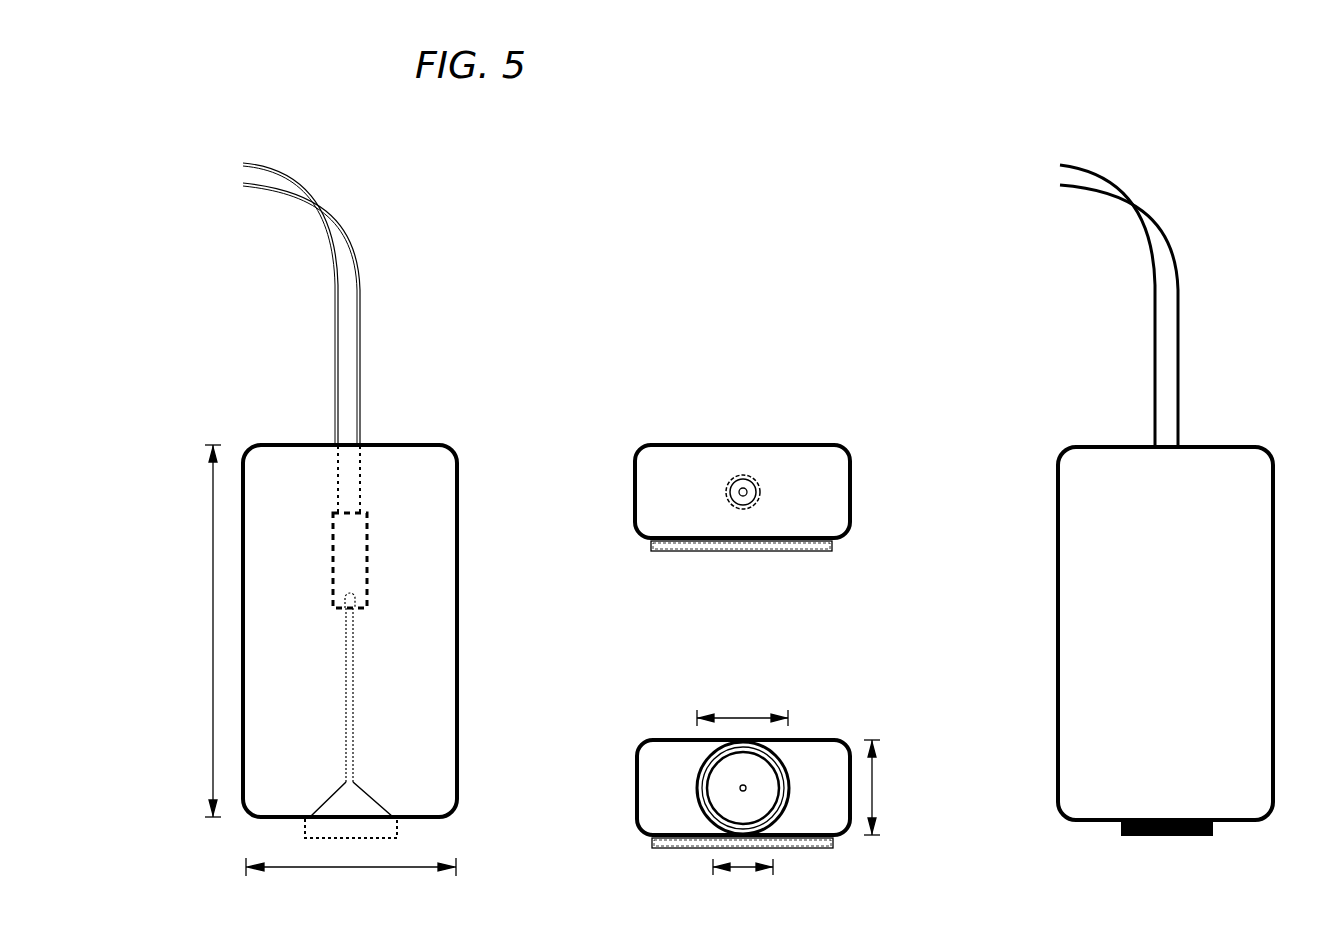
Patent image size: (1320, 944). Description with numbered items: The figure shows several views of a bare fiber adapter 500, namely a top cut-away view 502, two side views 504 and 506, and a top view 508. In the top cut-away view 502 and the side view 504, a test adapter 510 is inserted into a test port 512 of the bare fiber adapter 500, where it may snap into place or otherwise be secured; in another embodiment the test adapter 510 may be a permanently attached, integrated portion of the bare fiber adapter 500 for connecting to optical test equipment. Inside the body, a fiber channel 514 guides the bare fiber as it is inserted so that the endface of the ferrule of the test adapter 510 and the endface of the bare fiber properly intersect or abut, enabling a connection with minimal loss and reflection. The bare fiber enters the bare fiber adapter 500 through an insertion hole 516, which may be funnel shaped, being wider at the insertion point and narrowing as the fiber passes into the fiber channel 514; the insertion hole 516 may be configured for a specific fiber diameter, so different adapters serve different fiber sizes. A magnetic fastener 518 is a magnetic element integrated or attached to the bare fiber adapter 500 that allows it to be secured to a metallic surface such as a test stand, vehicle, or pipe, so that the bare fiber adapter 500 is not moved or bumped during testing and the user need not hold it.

The bare fiber adapter 500 is at (766, 236).
The top cut-away view 502 is at (430, 444).
The side view 504 is at (836, 443).
The side view 506 is at (842, 742).
The top view 508 is at (1080, 445).
The test adapter 510 is at (346, 335).
The test port 512 is at (355, 540).
The fiber channel 514 is at (346, 698).
The insertion hole 516 is at (741, 788).
The magnetic fastener 518 is at (790, 552).